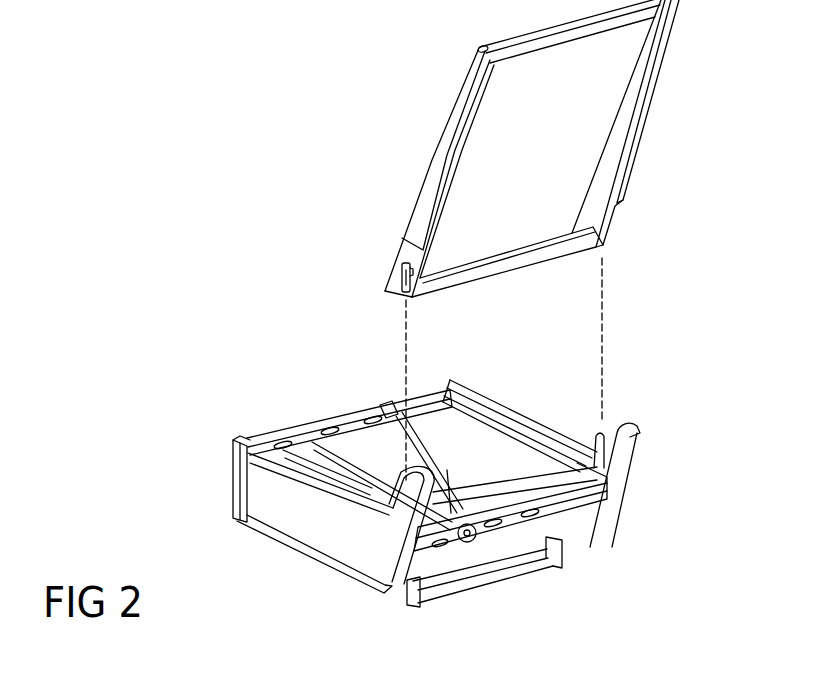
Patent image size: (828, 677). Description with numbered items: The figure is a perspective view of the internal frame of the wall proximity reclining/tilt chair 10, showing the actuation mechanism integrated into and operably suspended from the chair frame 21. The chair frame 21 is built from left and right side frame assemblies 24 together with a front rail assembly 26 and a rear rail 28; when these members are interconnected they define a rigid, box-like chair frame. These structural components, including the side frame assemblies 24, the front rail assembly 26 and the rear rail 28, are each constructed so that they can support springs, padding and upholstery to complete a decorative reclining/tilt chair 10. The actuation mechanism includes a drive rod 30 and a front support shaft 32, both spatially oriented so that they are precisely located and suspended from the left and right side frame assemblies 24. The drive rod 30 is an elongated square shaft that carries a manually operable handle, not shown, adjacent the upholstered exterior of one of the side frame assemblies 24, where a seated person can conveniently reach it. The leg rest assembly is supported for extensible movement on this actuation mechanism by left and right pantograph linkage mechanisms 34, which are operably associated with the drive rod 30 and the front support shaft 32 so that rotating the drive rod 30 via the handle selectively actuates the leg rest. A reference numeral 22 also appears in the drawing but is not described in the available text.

The wall proximity reclining/tilt chair 10 is at (437, 22).
The chair frame 21 is at (272, 554).
The bottom bar 22 is at (533, 573).
The side frame assemblies 24 is at (529, 427).
The front rail assembly 26 is at (296, 433).
The rear rail 28 is at (563, 517).
The drive rod 30 is at (340, 543).
The front support shaft 32 is at (360, 428).
The pantograph linkage mechanisms 34 is at (388, 406).